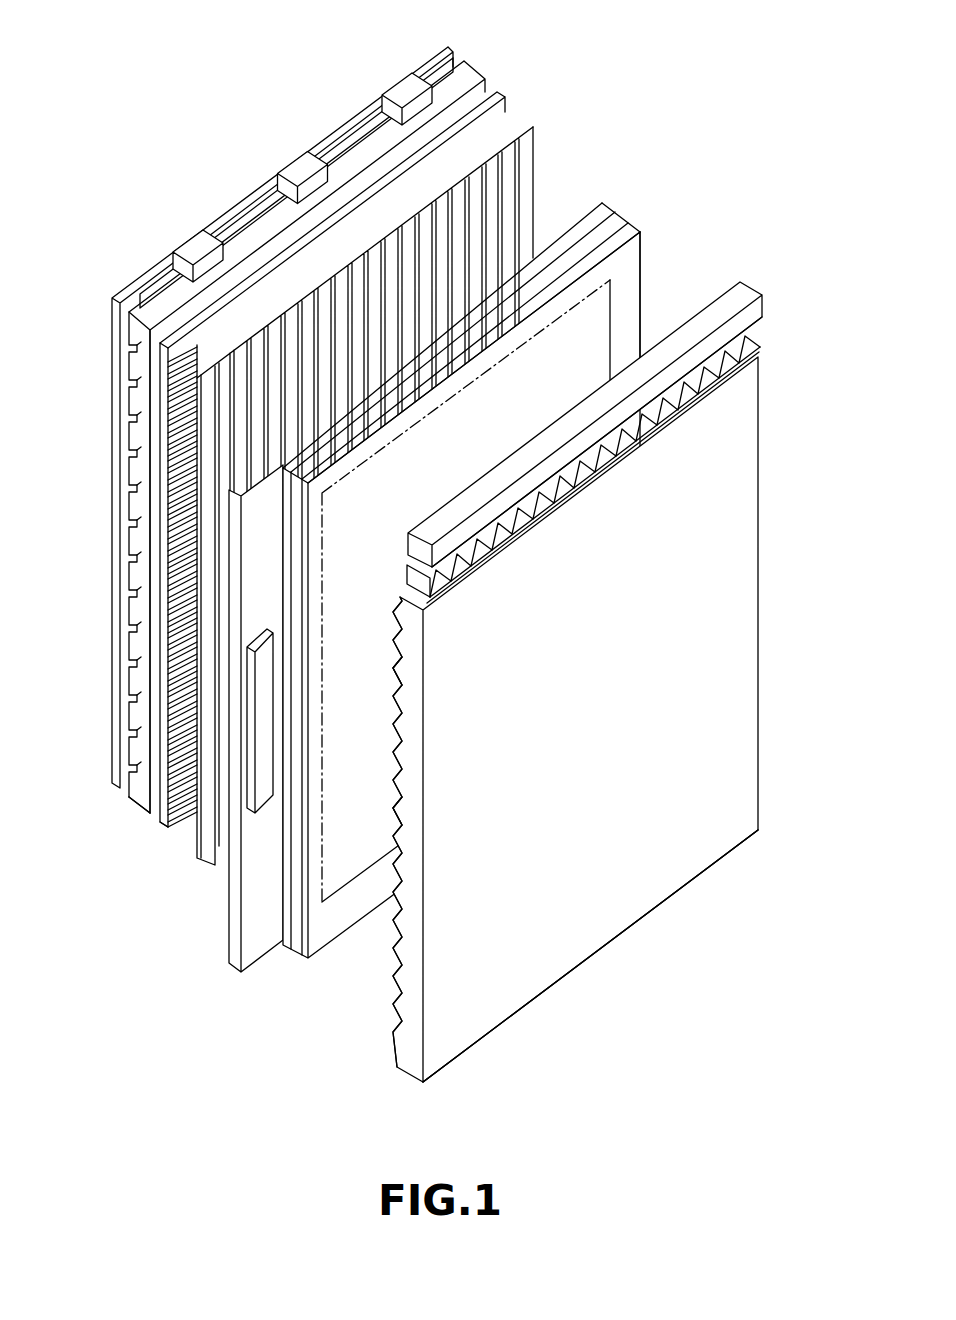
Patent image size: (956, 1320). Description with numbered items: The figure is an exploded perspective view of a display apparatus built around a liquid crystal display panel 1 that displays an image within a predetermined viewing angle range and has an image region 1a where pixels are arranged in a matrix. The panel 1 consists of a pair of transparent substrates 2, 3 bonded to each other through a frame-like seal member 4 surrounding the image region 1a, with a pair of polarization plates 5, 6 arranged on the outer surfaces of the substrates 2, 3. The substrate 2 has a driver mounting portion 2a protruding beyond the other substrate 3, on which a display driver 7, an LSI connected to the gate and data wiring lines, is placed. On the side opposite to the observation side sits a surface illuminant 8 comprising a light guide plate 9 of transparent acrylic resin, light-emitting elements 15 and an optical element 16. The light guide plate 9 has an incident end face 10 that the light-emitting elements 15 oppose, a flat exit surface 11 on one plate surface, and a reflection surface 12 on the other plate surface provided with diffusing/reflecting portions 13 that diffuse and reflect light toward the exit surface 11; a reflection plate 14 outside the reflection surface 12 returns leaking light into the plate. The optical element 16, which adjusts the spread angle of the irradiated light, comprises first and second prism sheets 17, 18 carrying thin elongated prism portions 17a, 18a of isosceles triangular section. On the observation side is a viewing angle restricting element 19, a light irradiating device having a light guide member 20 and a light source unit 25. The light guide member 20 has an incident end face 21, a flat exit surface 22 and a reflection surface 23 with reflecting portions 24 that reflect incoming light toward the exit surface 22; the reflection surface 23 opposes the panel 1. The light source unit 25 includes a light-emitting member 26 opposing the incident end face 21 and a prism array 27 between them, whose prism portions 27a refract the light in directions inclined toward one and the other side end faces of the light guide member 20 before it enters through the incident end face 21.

The liquid crystal display panel 1 is at (281, 953).
The image region 1a is at (348, 863).
The transparent substrate 2 is at (603, 207).
The driver mounting portion 2a is at (251, 950).
The transparent substrate 3 is at (622, 222).
The seal member 4 is at (407, 385).
The polarization plate 5 is at (602, 203).
The polarization plate 6 is at (622, 273).
The display driver 7 is at (268, 733).
The surface illuminant 8 is at (148, 822).
The light guide plate 9 is at (135, 801).
The incident end face 10 is at (253, 230).
The exit surface 11 is at (150, 705).
The reflection surface 12 is at (128, 563).
The diffusing/reflecting portions 13 is at (129, 488).
The reflection plate 14 is at (112, 326).
The light-emitting elements 15 is at (195, 247).
The optical element 16 is at (553, 122).
The first prism sheet 17 is at (182, 343).
The prism portions 17a is at (165, 768).
The second prism sheet 18 is at (207, 412).
The prism portions 18a is at (477, 237).
The viewing angle restricting element 19 is at (540, 995).
The light guide member 20 is at (760, 722).
The incident end face 21 is at (440, 597).
The exit surface 22 is at (628, 880).
The reflection surface 23 is at (396, 1027).
The reflecting portions 24 is at (400, 663).
The light source unit 25 is at (766, 324).
The light-emitting member 26 is at (568, 428).
The prism array 27 is at (417, 573).
The prism portions 27a is at (593, 473).